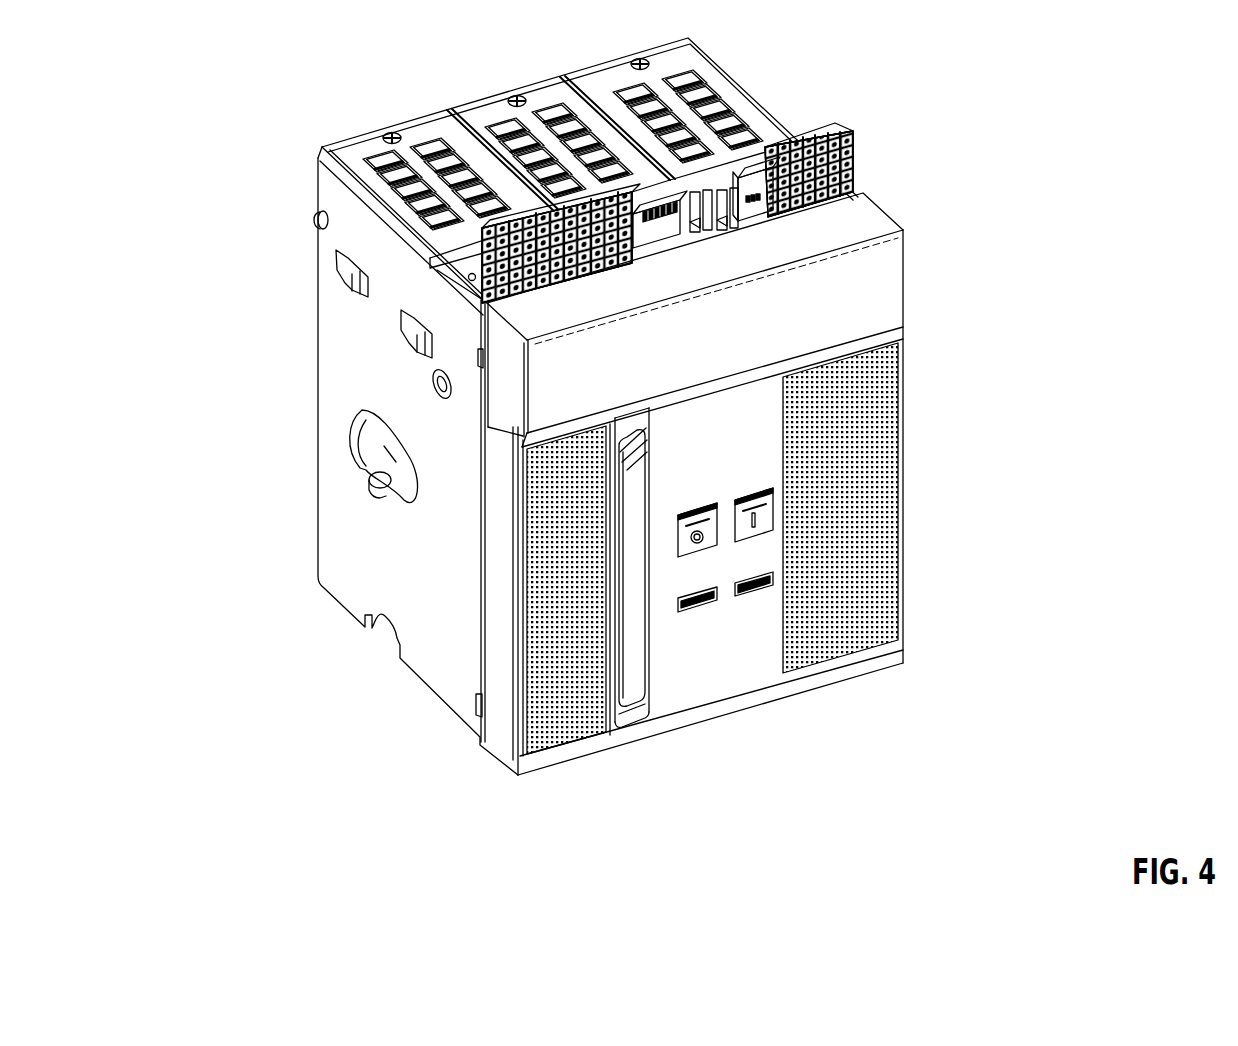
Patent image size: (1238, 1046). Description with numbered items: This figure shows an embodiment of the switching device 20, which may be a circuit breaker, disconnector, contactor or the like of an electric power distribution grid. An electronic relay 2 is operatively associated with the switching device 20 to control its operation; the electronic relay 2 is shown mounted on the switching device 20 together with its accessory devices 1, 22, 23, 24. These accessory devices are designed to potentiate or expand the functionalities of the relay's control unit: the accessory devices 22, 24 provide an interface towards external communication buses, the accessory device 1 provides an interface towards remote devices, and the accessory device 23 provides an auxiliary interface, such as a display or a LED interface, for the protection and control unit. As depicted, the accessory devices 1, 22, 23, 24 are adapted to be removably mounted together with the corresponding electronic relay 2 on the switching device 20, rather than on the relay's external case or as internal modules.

The switching device 20 is at (283, 150).
The electronic relay 2 is at (882, 278).
The accessory device 22 is at (657, 242).
The accessory device 1 is at (693, 224).
The accessory device 24 is at (723, 224).
The accessory device 23 is at (760, 212).